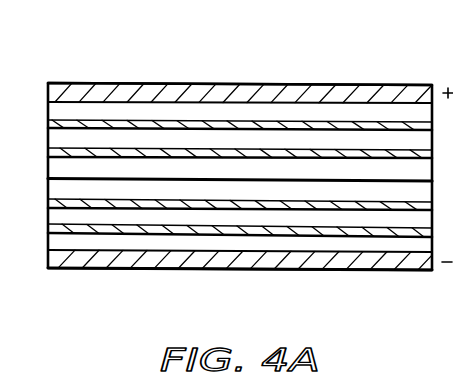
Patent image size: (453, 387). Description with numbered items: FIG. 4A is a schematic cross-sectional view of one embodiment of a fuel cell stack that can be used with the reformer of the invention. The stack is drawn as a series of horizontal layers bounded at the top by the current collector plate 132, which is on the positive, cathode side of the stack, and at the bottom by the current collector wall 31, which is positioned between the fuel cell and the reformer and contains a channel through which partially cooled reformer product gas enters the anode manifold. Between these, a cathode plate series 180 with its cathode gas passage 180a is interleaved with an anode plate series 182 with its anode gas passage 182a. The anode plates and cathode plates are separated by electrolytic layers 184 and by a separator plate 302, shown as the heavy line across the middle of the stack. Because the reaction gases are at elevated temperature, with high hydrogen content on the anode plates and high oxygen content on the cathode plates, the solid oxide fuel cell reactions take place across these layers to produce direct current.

The current collector wall 31 is at (83, 270).
The current collector plate 132 is at (410, 88).
The cathode plate series 180 is at (175, 123).
The cathode gas passage 180a is at (83, 177).
The anode plate series 182 is at (230, 148).
The anode gas passage 182a is at (340, 167).
The electrolytic layer 184 is at (302, 217).
The separator plate 302 is at (373, 182).